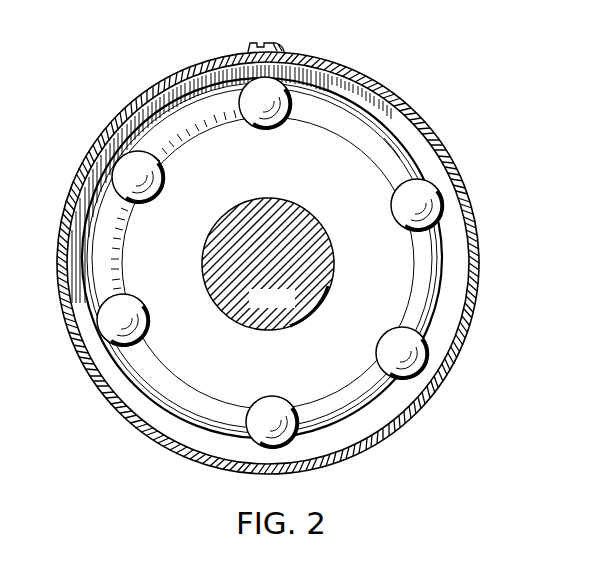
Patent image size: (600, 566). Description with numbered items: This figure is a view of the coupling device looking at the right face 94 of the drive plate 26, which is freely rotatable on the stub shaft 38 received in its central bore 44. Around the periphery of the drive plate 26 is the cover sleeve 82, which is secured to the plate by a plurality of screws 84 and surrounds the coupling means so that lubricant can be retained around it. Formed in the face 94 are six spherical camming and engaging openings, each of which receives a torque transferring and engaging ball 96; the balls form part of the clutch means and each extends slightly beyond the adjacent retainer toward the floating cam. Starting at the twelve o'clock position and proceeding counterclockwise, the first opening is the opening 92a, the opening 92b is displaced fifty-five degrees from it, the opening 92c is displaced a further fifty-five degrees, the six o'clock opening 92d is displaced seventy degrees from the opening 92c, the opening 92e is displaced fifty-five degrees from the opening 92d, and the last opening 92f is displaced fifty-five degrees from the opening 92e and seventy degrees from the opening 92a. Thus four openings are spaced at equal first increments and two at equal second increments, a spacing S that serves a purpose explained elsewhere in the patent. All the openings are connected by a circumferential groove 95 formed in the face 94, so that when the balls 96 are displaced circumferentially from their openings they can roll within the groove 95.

The cover sleeve 82 is at (356, 76).
The screws 84 is at (263, 41).
The spacing S is at (243, 92).
The twelve o'clock opening 92a is at (276, 92).
The opening 92b is at (162, 176).
The opening 92c is at (147, 305).
The six o'clock opening 92d is at (257, 440).
The opening 92e is at (377, 355).
The opening 92f is at (412, 229).
The right face of the drive plate 94 is at (262, 258).
The circumferential groove 95 is at (388, 146).
The ball 96 is at (437, 192).
The drive plate 26 is at (262, 258).
The central bore 44 is at (282, 206).
The stub shaft 38 is at (268, 264).